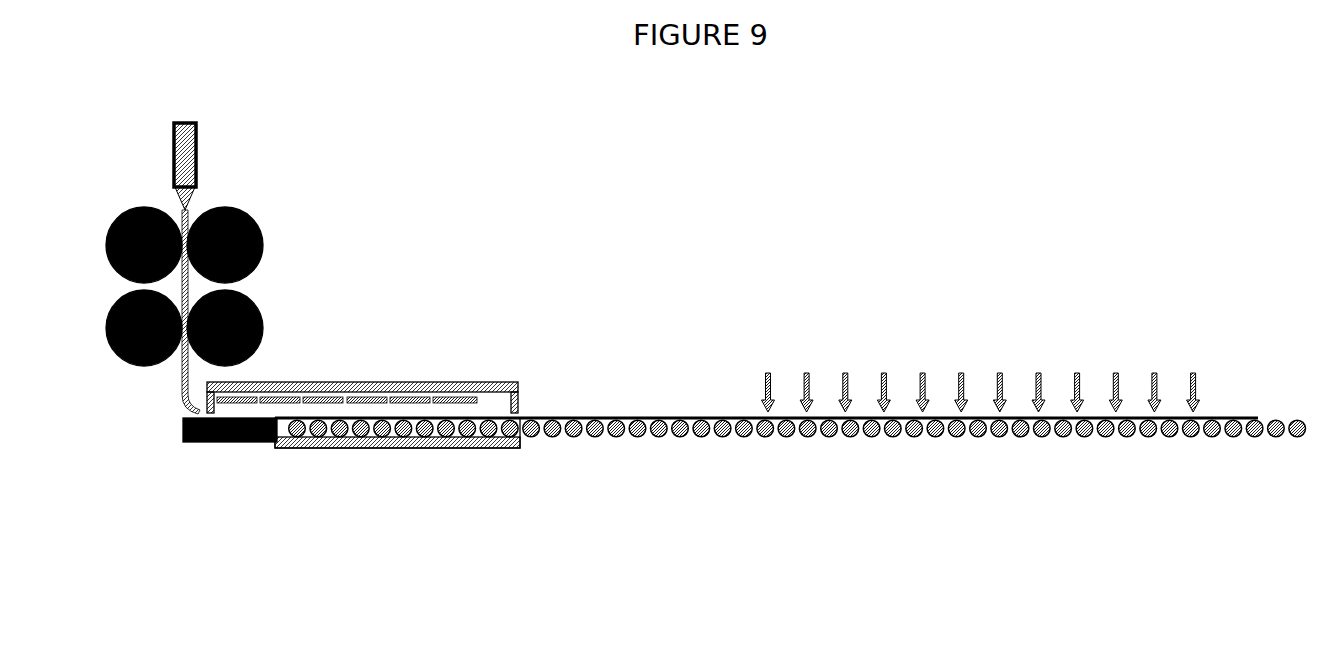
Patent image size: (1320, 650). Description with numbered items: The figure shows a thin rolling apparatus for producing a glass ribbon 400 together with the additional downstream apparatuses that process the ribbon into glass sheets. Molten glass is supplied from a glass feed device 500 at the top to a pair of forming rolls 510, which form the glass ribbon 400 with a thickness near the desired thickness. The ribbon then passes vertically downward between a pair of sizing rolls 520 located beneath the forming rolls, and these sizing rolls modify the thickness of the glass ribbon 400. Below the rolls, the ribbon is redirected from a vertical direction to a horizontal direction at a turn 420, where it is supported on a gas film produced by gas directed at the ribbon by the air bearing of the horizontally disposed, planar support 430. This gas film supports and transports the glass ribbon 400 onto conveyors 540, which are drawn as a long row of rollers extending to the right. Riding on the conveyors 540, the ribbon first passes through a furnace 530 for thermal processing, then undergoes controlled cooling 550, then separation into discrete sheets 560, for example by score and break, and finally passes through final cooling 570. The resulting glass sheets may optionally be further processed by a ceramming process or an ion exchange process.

The glass feed device 500 is at (185, 123).
The forming rolls 510 is at (230, 212).
The sizing rolls 520 is at (262, 313).
The glass ribbon 400 is at (190, 368).
The furnace 530 is at (391, 382).
The planar support 430 is at (223, 442).
The turn 420 is at (166, 393).
The conveyors 540 is at (573, 433).
The controlled cooling 550 is at (573, 405).
The separation into discrete sheets 560 is at (865, 374).
The final cooling 570 is at (1096, 370).